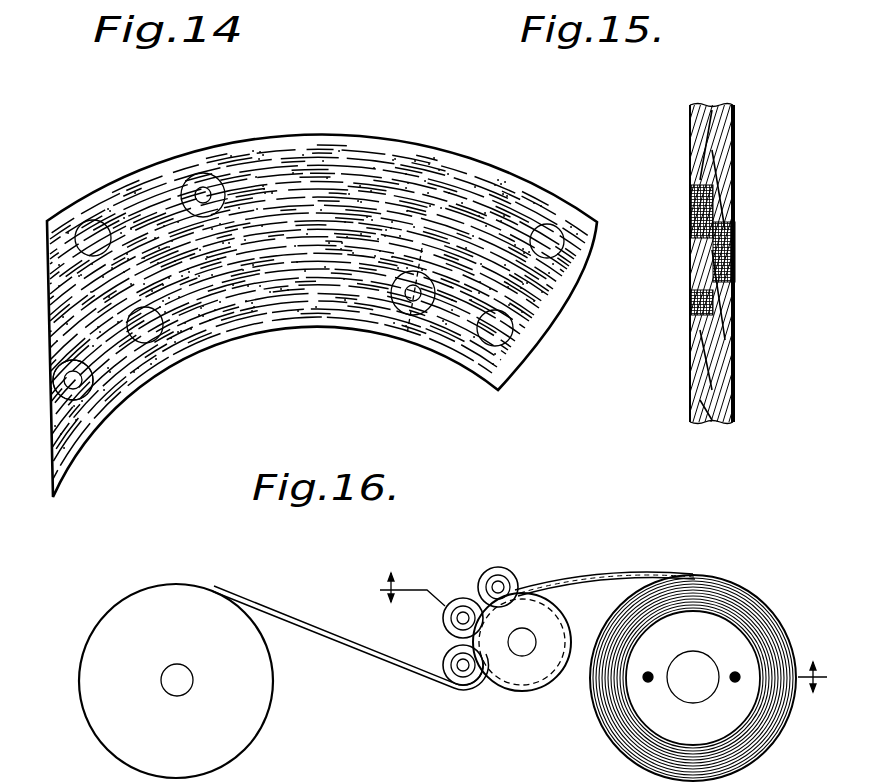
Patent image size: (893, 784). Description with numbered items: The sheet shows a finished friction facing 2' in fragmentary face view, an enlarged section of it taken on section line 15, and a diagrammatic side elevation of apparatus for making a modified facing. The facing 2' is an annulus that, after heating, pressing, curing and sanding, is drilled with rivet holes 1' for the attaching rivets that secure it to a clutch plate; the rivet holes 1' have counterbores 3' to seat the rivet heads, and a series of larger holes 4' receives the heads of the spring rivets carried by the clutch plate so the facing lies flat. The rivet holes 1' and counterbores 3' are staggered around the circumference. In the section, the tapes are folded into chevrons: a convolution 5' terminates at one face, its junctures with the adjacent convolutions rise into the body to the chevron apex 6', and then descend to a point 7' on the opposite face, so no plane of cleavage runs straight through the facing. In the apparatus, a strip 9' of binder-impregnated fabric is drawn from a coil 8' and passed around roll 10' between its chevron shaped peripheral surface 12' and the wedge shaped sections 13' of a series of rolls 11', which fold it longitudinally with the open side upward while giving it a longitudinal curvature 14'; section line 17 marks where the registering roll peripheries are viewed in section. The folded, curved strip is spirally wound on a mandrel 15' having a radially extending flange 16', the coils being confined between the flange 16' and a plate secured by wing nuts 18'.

In FIG. 14, the rivet holes 1' is at (244, 275).
In FIG. 15, the rivet holes 1' is at (747, 252).
In FIG. 14, the friction facing 2' is at (322, 290).
In FIG. 15, the friction facing 2' is at (679, 299).
In FIG. 14, the counterbores 3' is at (104, 394).
In FIG. 14, the holes 4' is at (344, 275).
In FIG. 14, the section line 15— 15 is at (427, 296).
In FIG. 15, the convolution 5' is at (712, 262).
In FIG. 15, the apex of the chevron 6' is at (679, 212).
In FIG. 15, the point on opposite face 7' is at (667, 263).
In FIG. 16, the coil of fabric 8' is at (176, 659).
In FIG. 16, the strip 9' is at (350, 630).
In FIG. 16, the roll 10' is at (538, 641).
In FIG. 16, the rolls 11' is at (456, 607).
In FIG. 16, the chevron shaped peripheral surface 12' is at (522, 664).
In FIG. 16, the wedge shaped sections 13' is at (460, 600).
In FIG. 16, the longitudinal curvature 14' is at (605, 562).
In FIG. 16, the flange 16' is at (695, 672).
In FIG. 16, the mandrel 15' is at (722, 670).
In FIG. 16, the section line 17 is at (587, 647).
In FIG. 16, the wing nuts 18' is at (691, 702).